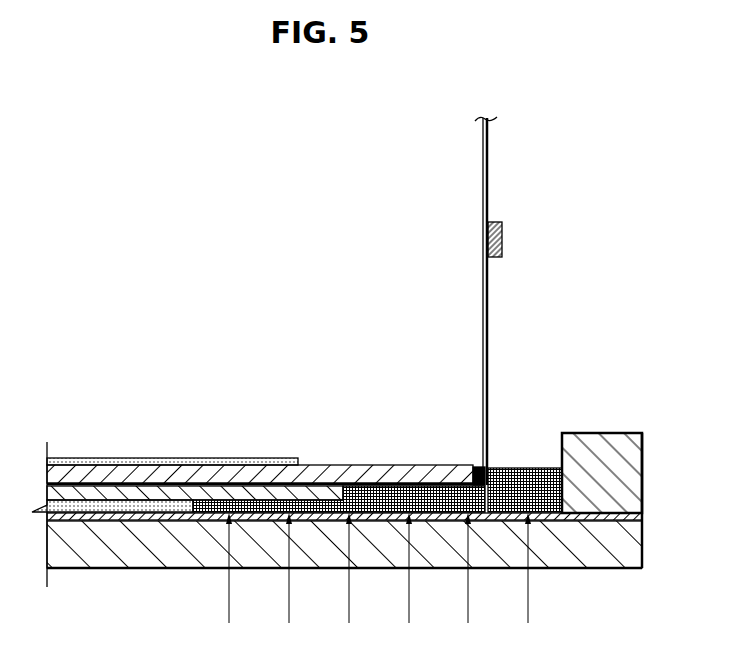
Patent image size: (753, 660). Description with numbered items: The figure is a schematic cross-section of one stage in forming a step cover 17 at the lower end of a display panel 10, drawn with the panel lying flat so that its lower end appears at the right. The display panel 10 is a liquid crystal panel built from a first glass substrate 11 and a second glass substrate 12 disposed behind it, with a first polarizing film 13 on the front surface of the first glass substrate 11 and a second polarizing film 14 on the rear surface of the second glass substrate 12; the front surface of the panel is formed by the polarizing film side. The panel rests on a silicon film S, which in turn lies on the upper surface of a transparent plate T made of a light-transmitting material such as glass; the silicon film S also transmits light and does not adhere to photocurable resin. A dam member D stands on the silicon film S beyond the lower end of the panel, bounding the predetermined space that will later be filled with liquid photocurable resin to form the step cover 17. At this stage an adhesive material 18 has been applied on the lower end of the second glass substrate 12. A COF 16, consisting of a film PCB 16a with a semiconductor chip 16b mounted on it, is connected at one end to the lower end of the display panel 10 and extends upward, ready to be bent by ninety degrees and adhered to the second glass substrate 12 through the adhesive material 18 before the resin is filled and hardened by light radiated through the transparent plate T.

The display panel 10 is at (258, 483).
The first glass substrate 11 is at (252, 513).
The second glass substrate 12 is at (232, 472).
The first polarizing film 13 is at (155, 513).
The second polarizing film 14 is at (141, 463).
The COF 16 is at (546, 301).
The film PCB 16a is at (488, 168).
The semiconductor chip 16b is at (502, 236).
The step cover 17 is at (530, 468).
The adhesive material 18 is at (480, 467).
The transparent plate T is at (373, 558).
The silicon film S is at (548, 520).
The dam member D is at (627, 475).